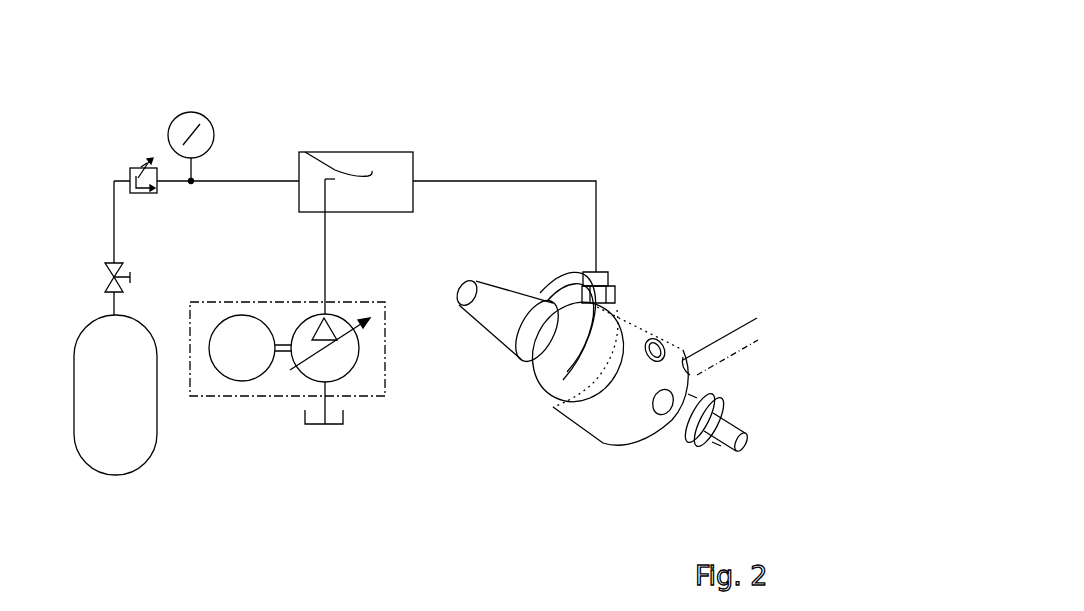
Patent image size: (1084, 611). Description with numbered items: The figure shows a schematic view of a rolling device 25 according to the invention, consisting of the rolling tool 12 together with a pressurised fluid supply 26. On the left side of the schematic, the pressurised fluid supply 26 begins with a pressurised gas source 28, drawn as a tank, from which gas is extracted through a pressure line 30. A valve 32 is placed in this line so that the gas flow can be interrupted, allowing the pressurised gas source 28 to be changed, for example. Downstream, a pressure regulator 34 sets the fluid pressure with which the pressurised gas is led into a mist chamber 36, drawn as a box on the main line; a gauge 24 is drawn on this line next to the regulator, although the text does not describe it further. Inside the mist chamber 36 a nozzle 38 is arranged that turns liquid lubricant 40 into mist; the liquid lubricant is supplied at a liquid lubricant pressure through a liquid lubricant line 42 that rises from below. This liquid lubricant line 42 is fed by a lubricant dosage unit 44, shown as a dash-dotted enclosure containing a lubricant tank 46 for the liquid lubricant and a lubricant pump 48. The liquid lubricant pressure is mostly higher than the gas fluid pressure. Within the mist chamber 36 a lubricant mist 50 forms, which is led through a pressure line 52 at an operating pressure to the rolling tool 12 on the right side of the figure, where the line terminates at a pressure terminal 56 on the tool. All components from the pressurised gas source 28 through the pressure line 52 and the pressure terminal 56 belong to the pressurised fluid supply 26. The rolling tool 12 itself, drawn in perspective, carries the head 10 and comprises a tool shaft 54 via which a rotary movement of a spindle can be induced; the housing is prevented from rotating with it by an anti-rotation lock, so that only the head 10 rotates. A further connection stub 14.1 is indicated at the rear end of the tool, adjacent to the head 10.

The head 10 is at (723, 425).
The rolling tool 12 is at (612, 422).
The connection stub 14.1 is at (740, 435).
The pressure gauge 24 is at (193, 148).
The rolling device 25 is at (732, 105).
The pressurised fluid supply 26 is at (596, 74).
The pressurised gas source 28 is at (128, 455).
The pressure line 30 is at (113, 178).
The valve 32 is at (113, 260).
The pressure regulator 34 is at (143, 170).
The mist chamber 36 is at (415, 165).
The nozzle 38 is at (305, 152).
The liquid lubricant 40 is at (260, 257).
The liquid lubricant line 42 is at (327, 253).
The lubricant dosage unit 44 is at (370, 400).
The lubricant tank 46 is at (332, 423).
The lubricant pump 48 is at (343, 363).
The lubricant mist 50 is at (385, 199).
The pressure line 52 is at (513, 182).
The tool shaft 54 is at (522, 338).
The pressure terminal 56 is at (603, 288).